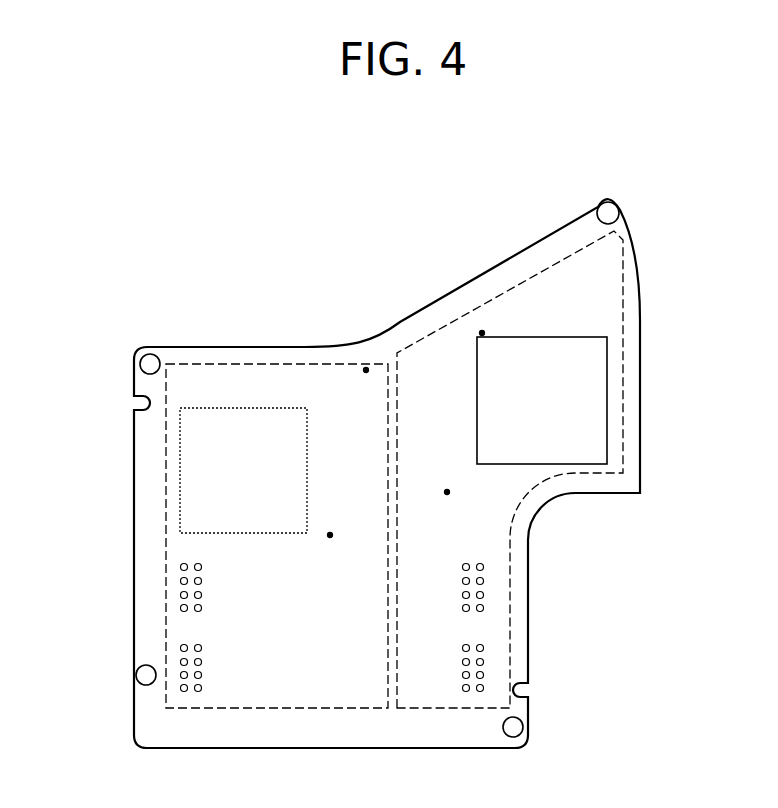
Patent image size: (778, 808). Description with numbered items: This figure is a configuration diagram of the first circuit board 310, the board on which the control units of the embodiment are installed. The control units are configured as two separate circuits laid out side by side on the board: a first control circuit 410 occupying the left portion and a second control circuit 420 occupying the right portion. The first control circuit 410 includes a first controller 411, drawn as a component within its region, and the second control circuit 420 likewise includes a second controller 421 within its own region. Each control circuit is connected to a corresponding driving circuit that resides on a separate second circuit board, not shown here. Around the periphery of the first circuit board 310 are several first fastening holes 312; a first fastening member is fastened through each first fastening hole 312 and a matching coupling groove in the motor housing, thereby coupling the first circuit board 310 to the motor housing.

The first circuit board 310 is at (537, 510).
The first fastening hole 312 is at (150, 360).
The first control circuit 410 is at (272, 362).
The first controller 411 is at (210, 472).
The second control circuit 420 is at (492, 290).
The second controller 421 is at (587, 394).